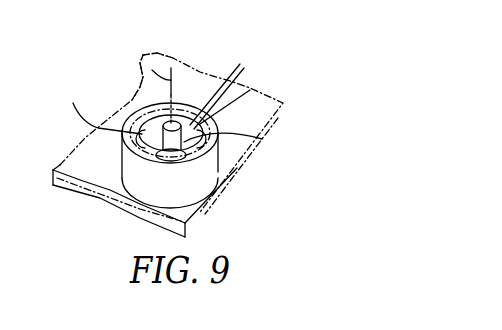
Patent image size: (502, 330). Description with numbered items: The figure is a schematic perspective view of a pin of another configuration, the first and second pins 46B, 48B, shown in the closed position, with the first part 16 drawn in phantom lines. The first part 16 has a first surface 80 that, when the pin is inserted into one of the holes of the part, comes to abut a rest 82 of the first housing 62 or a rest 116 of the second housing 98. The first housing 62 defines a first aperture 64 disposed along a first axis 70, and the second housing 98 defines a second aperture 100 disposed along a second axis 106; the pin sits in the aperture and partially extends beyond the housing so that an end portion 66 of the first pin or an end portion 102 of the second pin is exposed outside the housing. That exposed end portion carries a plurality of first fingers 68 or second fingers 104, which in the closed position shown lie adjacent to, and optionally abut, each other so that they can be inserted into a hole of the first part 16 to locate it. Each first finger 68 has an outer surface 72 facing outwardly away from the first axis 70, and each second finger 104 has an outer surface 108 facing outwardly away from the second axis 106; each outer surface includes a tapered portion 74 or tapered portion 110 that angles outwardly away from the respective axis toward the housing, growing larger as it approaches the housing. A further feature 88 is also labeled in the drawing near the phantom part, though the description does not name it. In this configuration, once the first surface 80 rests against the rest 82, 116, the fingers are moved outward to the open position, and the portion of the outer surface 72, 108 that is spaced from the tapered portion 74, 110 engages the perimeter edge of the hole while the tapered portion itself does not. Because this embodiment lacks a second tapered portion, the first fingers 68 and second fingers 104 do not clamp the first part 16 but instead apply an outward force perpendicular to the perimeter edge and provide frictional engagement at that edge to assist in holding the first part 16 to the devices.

The first part 16 is at (47, 170).
The first surface 80 is at (75, 192).
The first pin 46B is at (182, 113).
The second pin 48B is at (182, 113).
The first axis 70 is at (122, 69).
The second axis 106 is at (143, 55).
The aperture 88 is at (137, 83).
The outer surface 72 is at (211, 170).
The outer surface 108 is at (211, 170).
The first housing 62 is at (197, 185).
The second housing 98 is at (183, 160).
The first aperture 64 is at (185, 178).
The second aperture 100 is at (185, 178).
The end portion 66 is at (119, 192).
The end portion 102 is at (166, 152).
The first fingers 68 is at (185, 111).
The second fingers 104 is at (263, 84).
The tapered portion 74 is at (241, 92).
The tapered portion 110 is at (241, 92).
The rest 82 is at (257, 144).
The rest 116 is at (262, 139).